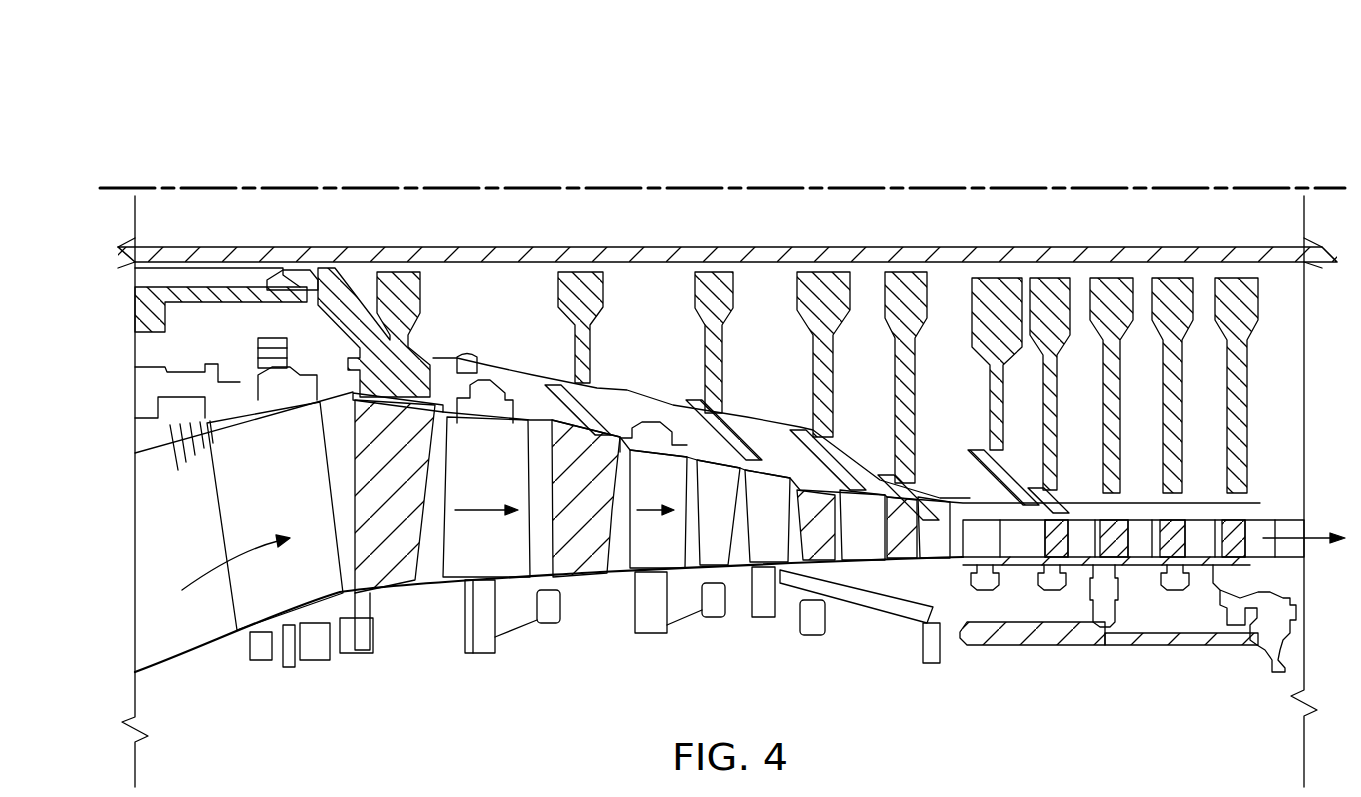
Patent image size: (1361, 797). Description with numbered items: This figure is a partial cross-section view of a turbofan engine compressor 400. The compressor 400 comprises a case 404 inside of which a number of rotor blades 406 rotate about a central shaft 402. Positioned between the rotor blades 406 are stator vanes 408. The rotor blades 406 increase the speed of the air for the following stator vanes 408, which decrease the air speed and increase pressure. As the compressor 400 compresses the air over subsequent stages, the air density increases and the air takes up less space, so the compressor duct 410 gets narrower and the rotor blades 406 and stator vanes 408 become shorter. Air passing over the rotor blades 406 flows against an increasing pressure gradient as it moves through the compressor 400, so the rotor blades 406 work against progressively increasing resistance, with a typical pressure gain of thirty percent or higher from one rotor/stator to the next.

The compressor 400 is at (1068, 76).
The central shaft 402 is at (420, 192).
The case 404 is at (172, 658).
The rotor blades 406 is at (400, 577).
The stator vanes 408 is at (513, 481).
The compressor duct 410 is at (150, 578).